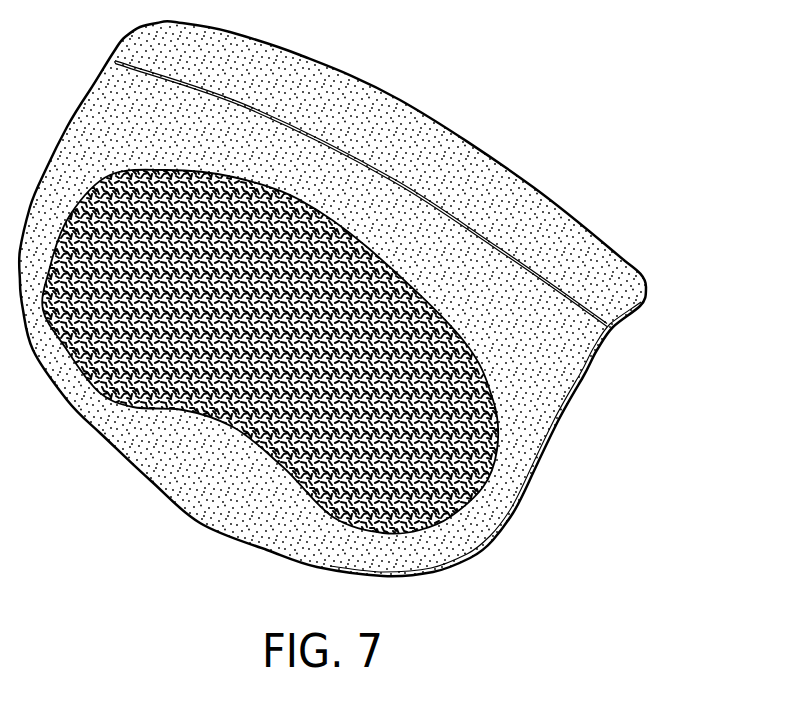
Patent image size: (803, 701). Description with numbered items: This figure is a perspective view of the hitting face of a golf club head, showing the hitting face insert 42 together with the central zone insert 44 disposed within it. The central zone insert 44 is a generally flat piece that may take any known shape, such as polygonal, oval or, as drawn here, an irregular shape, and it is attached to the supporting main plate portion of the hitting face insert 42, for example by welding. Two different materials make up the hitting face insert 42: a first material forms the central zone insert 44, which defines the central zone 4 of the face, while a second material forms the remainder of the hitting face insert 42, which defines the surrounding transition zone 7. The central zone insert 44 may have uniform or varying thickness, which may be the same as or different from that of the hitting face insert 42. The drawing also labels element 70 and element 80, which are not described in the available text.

The seam line 70 is at (415, 147).
The cushion boundary 80 is at (110, 173).
The cushion insert 4 is at (276, 386).
The sole member 42 is at (590, 443).
The peripheral edge 44 is at (463, 505).
The midsole layer 7 is at (242, 523).